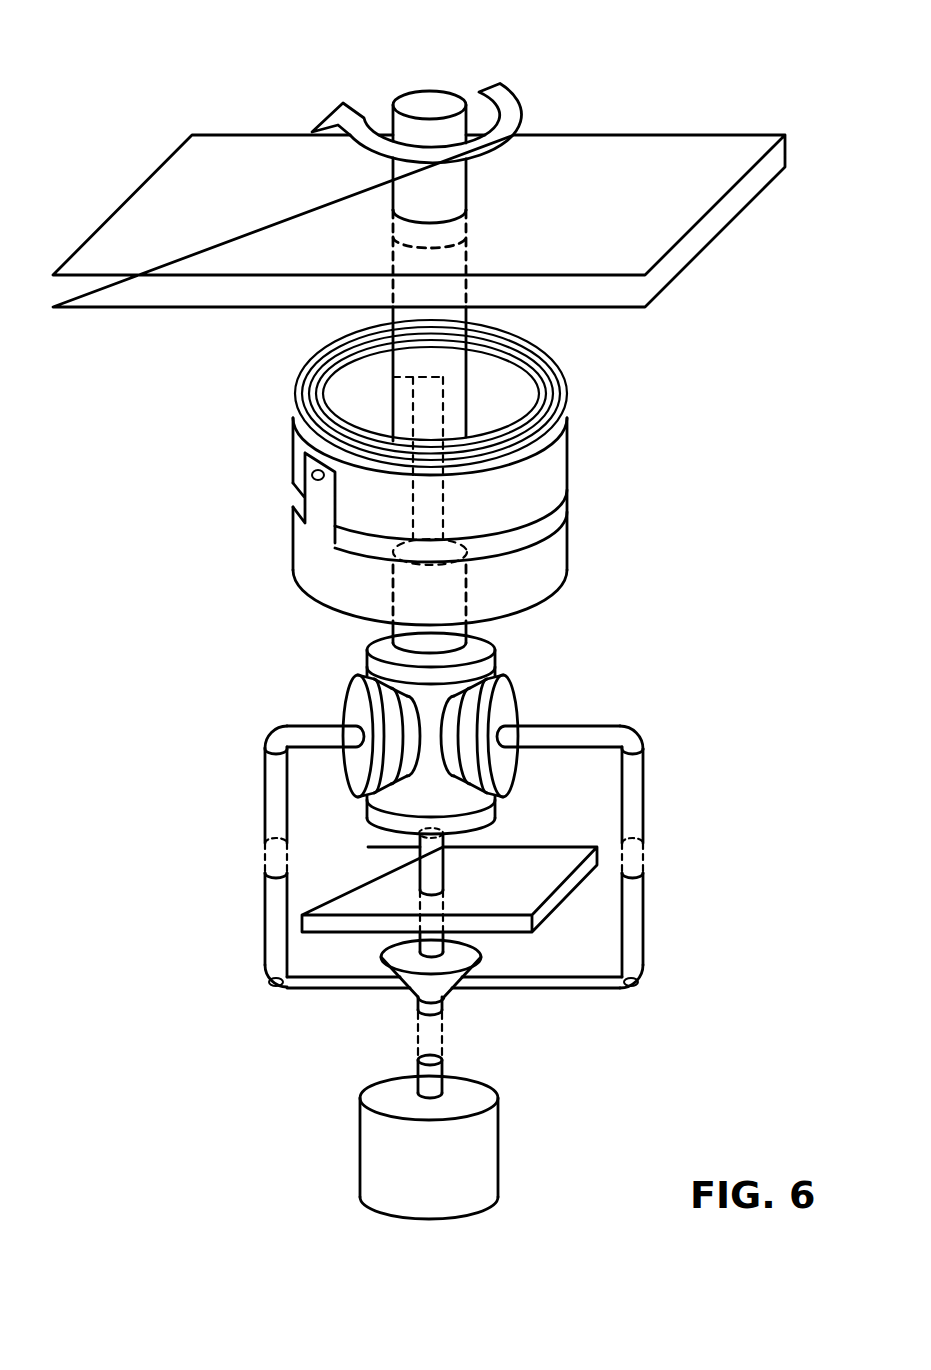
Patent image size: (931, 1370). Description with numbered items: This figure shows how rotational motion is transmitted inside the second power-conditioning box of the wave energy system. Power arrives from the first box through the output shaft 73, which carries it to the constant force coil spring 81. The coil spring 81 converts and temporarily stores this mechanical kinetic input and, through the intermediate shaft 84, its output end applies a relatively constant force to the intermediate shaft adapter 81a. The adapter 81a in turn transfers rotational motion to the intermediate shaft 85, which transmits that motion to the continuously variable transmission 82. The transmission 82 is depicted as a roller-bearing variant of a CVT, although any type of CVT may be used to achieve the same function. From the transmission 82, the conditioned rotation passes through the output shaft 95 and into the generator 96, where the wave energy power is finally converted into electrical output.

The output shaft 73 is at (449, 88).
The constant force coil spring 81 is at (258, 350).
The intermediate shaft adapter 81a is at (580, 472).
The continuously variable transmission 82 is at (683, 637).
The intermediate shaft 84 is at (467, 375).
The intermediate shaft 85 is at (467, 607).
The output shaft 95 is at (437, 1070).
The generator 96 is at (498, 1155).